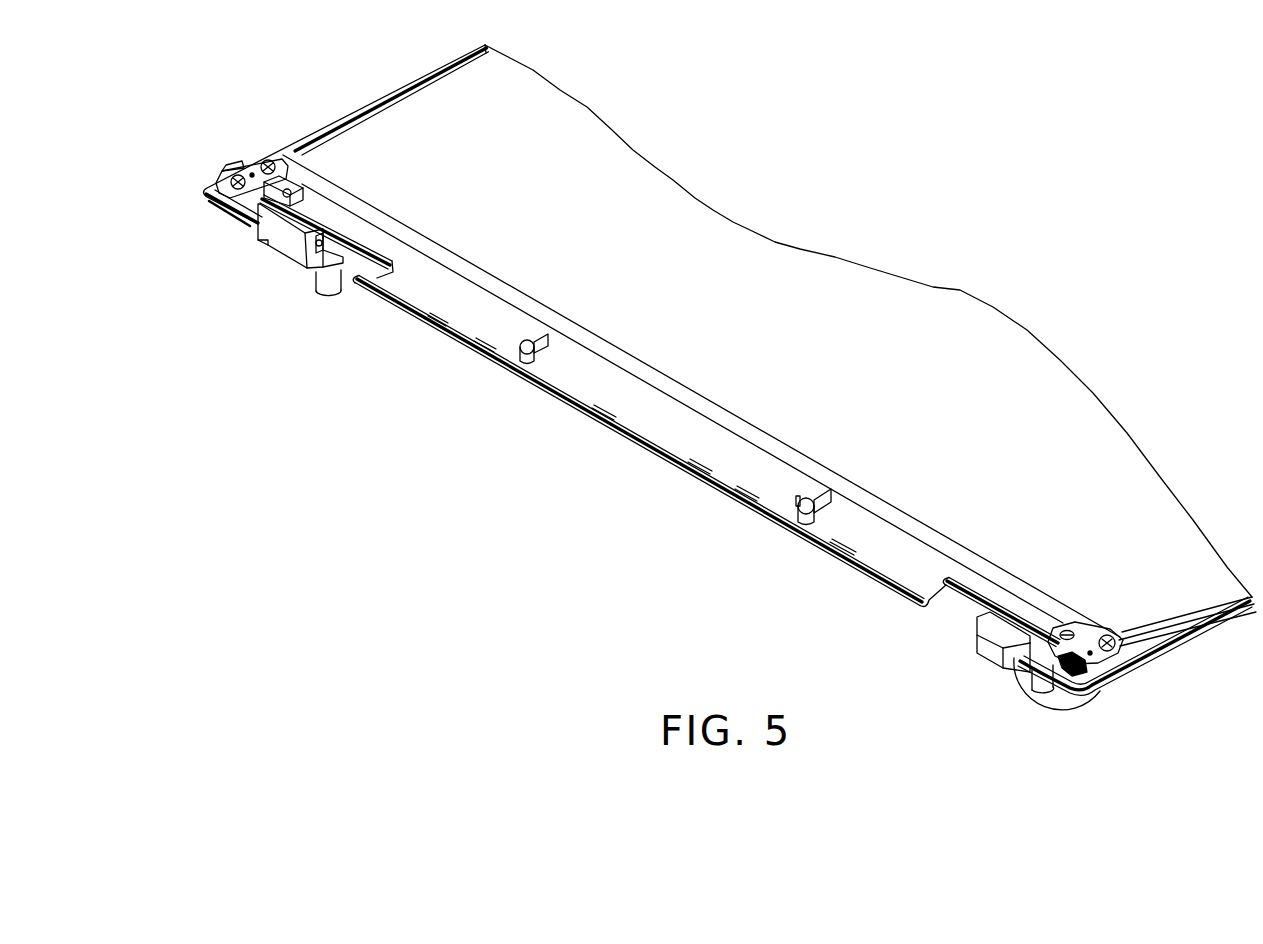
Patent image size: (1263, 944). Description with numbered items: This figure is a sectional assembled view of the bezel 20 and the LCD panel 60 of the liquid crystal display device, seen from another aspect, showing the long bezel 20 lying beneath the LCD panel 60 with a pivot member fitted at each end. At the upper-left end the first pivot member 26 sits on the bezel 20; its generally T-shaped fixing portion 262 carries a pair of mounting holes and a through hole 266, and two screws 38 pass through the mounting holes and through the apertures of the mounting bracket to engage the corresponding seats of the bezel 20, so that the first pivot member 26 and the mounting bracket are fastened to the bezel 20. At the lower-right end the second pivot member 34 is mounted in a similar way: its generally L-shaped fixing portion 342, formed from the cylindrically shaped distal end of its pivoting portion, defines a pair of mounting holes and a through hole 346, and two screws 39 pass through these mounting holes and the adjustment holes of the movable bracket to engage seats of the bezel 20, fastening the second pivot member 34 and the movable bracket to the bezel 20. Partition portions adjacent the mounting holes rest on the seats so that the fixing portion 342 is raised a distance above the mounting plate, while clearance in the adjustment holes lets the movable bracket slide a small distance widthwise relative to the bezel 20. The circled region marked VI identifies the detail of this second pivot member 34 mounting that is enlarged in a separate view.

The bezel 20 is at (747, 514).
The first pivot member 26 is at (318, 247).
The second pivot member 34 is at (988, 627).
The screws 38 is at (238, 168).
The screws 39 is at (1118, 650).
The LCD panel 60 is at (667, 345).
The fixing portion 262 is at (257, 160).
The through hole 266 is at (290, 186).
The fixing portion 342 is at (1106, 636).
The through hole 346 is at (1067, 629).
The detail view indicator VI is at (1100, 685).